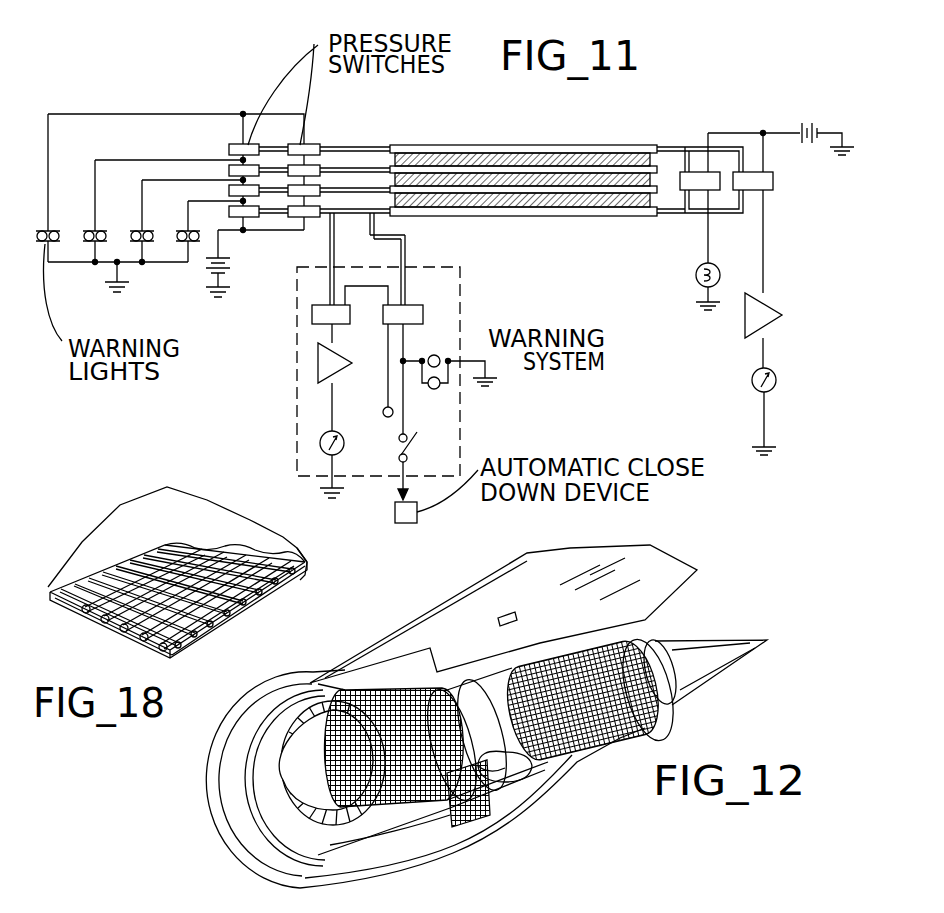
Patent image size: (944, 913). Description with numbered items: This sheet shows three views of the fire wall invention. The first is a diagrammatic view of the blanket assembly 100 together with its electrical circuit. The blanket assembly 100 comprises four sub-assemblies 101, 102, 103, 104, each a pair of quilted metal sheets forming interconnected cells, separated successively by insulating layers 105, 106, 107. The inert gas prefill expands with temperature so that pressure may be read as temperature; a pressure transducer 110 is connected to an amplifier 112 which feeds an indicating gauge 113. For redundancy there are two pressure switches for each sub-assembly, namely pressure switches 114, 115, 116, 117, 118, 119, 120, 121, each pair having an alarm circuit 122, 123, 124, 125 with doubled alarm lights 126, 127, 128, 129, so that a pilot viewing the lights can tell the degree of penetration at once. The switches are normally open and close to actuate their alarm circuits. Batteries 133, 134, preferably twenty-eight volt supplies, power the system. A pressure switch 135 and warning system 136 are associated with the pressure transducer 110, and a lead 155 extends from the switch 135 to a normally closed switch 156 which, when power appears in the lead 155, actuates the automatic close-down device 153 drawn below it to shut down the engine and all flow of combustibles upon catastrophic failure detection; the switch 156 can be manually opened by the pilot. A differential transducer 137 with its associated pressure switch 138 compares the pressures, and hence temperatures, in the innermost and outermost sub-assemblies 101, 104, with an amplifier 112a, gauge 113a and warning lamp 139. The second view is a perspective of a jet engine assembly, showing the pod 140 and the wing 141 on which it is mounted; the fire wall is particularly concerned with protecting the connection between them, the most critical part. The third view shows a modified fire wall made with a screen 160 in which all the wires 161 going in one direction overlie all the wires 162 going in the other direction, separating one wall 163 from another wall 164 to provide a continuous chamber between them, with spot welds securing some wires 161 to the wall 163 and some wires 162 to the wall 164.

In FIG. 11, the blanket assembly 100 is at (526, 161).
In FIG. 11, the sub-assembly 101 is at (582, 213).
In FIG. 11, the sub-assembly 102 is at (617, 190).
In FIG. 11, the sub-assembly 103 is at (533, 168).
In FIG. 11, the sub-assembly 104 is at (600, 149).
In FIG. 11, the insulating layer 105 is at (523, 198).
In FIG. 11, the insulating layer 106 is at (470, 180).
In FIG. 11, the insulating layer 107 is at (462, 160).
In FIG. 11, the pressure transducer 110 is at (312, 315).
In FIG. 11, the amplifier 112 is at (318, 363).
In FIG. 11, the indicating gauge 113 is at (320, 443).
In FIG. 11, the amplifier 112a is at (776, 310).
In FIG. 11, the gauge 113a is at (777, 379).
In FIG. 11, the pressure switch 114 is at (305, 145).
In FIG. 11, the pressure switch 115 is at (251, 146).
In FIG. 11, the pressure switch 116 is at (320, 165).
In FIG. 11, the pressure switch 117 is at (231, 167).
In FIG. 11, the pressure switch 118 is at (321, 194).
In FIG. 11, the pressure switch 119 is at (231, 188).
In FIG. 11, the pressure switch 120 is at (314, 218).
In FIG. 11, the pressure switch 121 is at (253, 218).
In FIG. 11, the alarm circuit 122 is at (62, 114).
In FIG. 11, the alarm circuit 123 is at (95, 160).
In FIG. 11, the alarm circuit 124 is at (142, 180).
In FIG. 11, the alarm circuit 125 is at (188, 201).
In FIG. 11, the alarm light 126 is at (52, 233).
In FIG. 11, the alarm light 127 is at (98, 244).
In FIG. 11, the alarm light 128 is at (145, 244).
In FIG. 11, the alarm light 129 is at (191, 244).
In FIG. 11, the battery 133 is at (800, 130).
In FIG. 11, the battery 134 is at (230, 272).
In FIG. 11, the pressure switch 135 is at (420, 305).
In FIG. 11, the warning system 136 is at (440, 357).
In FIG. 11, the differential transducer 137 is at (773, 181).
In FIG. 11, the pressure switch 138 is at (701, 172).
In FIG. 11, the warning lamp 139 is at (695, 278).
In FIG. 12, the pod 140 is at (383, 857).
In FIG. 12, the wing 141 is at (397, 625).
In FIG. 11, the automatic close down device 153 is at (395, 512).
In FIG. 11, the lead 155 is at (405, 400).
In FIG. 11, the normally closed switch 156 is at (400, 448).
In FIG. 18, the screen 160 is at (131, 636).
In FIG. 18, the wires 161 is at (105, 622).
In FIG. 18, the wires 162 is at (190, 630).
In FIG. 18, the wall 163 is at (127, 528).
In FIG. 18, the wall 164 is at (303, 569).